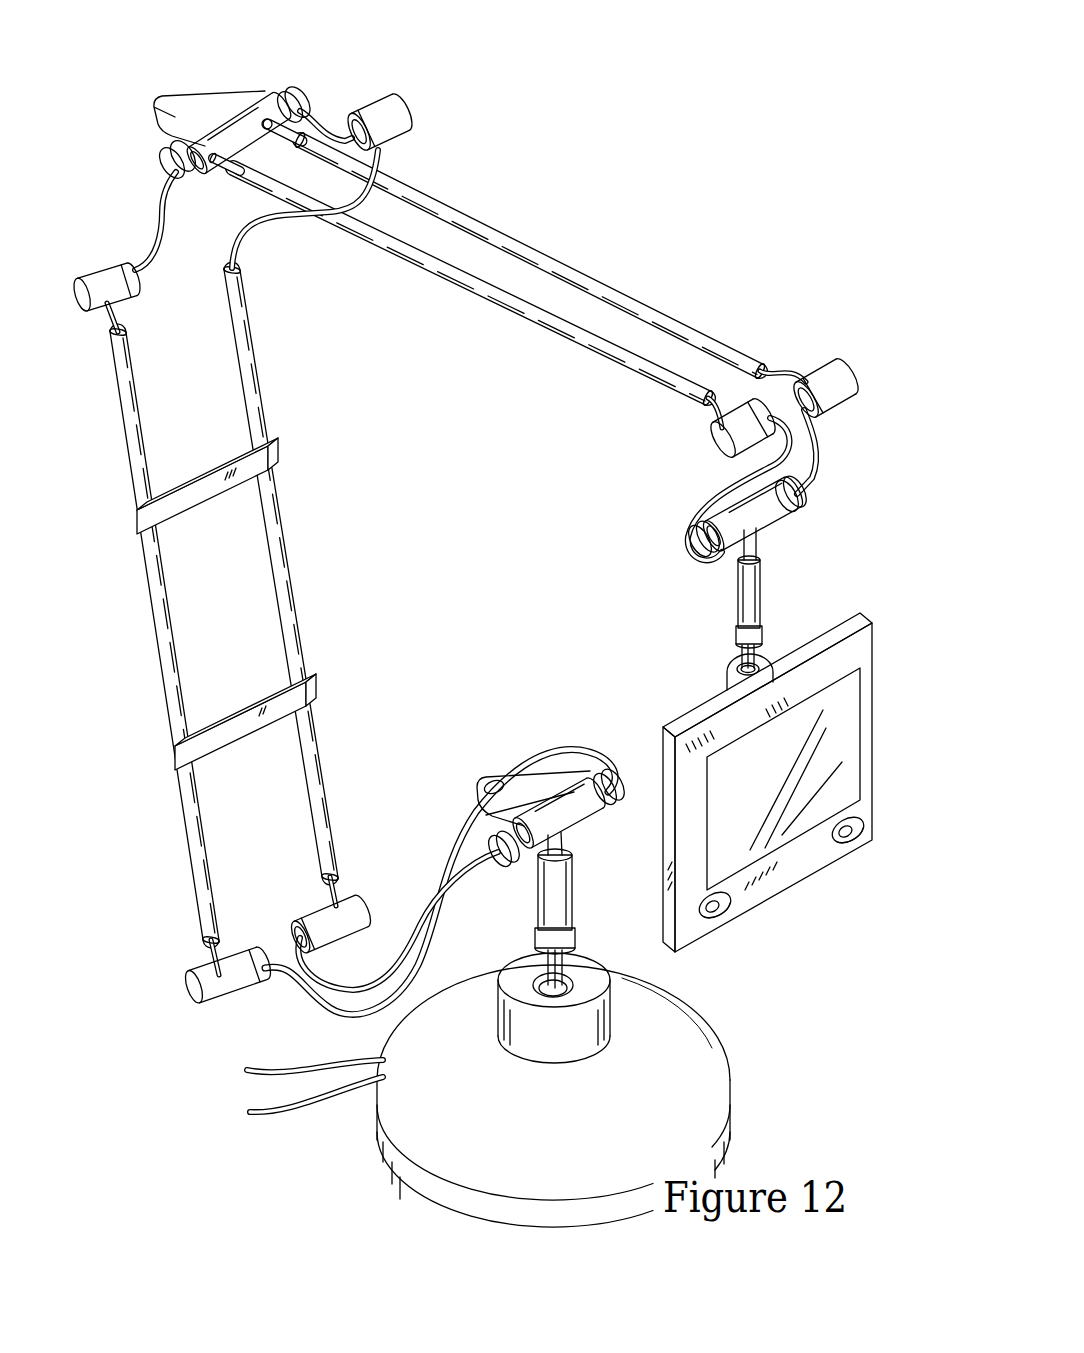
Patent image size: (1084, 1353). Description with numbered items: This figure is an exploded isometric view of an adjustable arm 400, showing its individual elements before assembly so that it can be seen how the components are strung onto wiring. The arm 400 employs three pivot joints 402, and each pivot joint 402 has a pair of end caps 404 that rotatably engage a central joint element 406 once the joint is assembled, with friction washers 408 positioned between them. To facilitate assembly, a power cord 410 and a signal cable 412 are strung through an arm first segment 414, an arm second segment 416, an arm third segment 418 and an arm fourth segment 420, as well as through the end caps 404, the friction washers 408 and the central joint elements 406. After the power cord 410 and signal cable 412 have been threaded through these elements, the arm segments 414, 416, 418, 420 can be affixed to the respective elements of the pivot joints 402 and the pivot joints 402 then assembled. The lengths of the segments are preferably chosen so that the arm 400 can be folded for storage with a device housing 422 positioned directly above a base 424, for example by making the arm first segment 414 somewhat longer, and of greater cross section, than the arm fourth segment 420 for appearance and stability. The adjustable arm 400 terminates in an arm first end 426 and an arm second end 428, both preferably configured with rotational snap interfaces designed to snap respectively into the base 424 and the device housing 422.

The adjustable arm 400 is at (690, 193).
The pivot joint 402 is at (475, 578).
The end cap 404 is at (127, 292).
The central joint element 406 is at (200, 142).
The friction washer 408 is at (293, 127).
The power cord 410 is at (320, 1007).
The signal cable 412 is at (480, 757).
The arm first segment 414 is at (570, 910).
The arm second segment 416 is at (295, 522).
The arm third segment 418 is at (572, 250).
The arm fourth segment 420 is at (750, 603).
The device housing 422 is at (760, 890).
The base 424 is at (720, 1087).
The arm first end 426 is at (572, 935).
The arm second end 428 is at (740, 640).